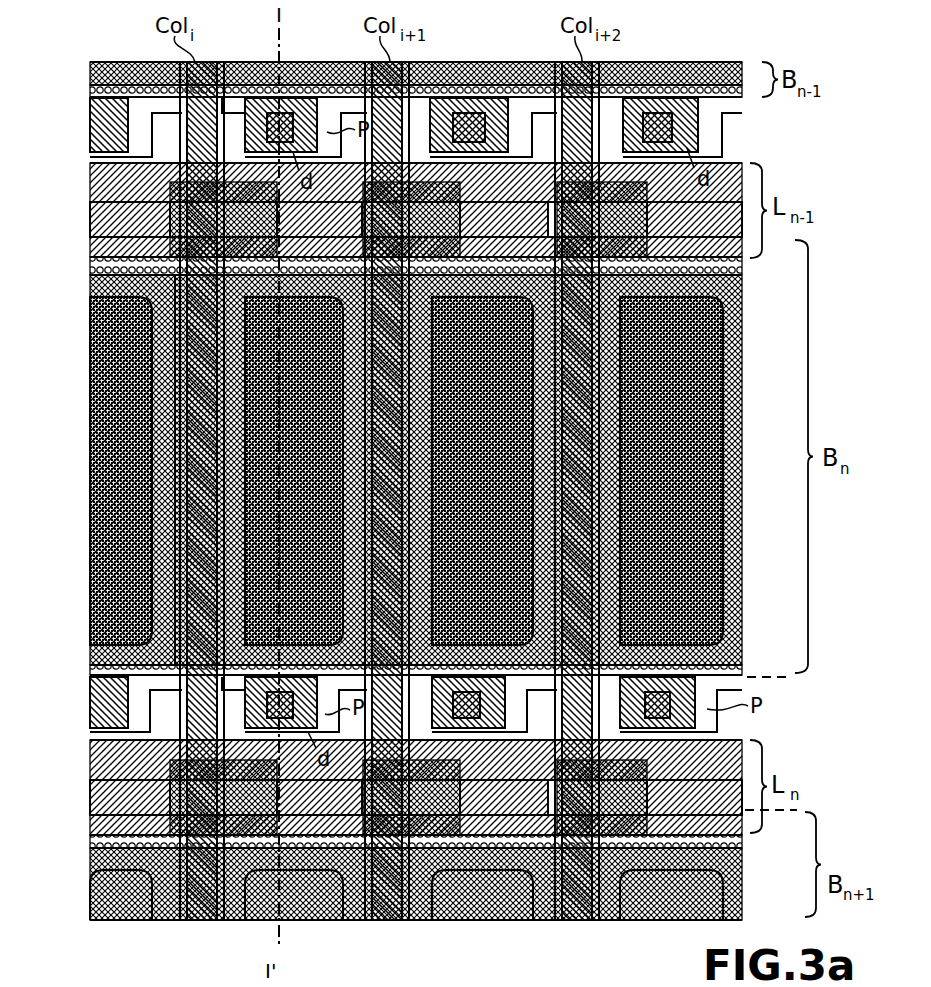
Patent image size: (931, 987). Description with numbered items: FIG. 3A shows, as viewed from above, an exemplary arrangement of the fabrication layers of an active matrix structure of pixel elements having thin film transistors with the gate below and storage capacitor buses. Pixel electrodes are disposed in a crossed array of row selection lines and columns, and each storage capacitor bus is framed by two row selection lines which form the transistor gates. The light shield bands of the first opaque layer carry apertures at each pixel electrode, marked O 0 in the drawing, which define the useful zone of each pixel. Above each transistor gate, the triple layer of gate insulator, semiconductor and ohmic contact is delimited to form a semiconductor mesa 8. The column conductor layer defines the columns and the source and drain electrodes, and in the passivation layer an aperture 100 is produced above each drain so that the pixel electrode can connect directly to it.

The aperture 100 is at (697, 130).
The mesa 8 is at (610, 198).
The memory cell active region 0 is at (265, 555).